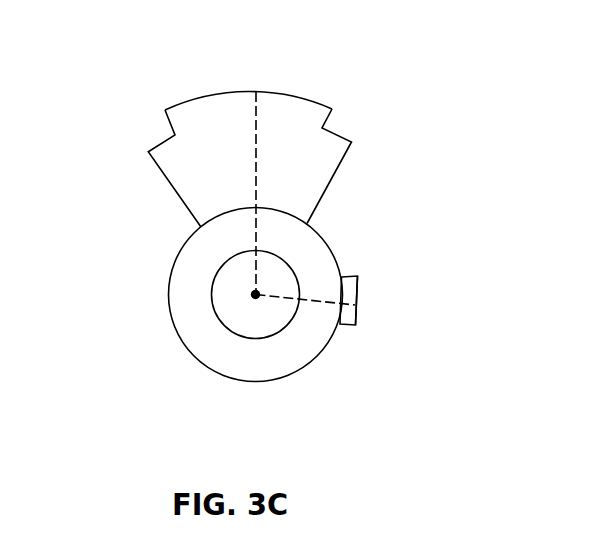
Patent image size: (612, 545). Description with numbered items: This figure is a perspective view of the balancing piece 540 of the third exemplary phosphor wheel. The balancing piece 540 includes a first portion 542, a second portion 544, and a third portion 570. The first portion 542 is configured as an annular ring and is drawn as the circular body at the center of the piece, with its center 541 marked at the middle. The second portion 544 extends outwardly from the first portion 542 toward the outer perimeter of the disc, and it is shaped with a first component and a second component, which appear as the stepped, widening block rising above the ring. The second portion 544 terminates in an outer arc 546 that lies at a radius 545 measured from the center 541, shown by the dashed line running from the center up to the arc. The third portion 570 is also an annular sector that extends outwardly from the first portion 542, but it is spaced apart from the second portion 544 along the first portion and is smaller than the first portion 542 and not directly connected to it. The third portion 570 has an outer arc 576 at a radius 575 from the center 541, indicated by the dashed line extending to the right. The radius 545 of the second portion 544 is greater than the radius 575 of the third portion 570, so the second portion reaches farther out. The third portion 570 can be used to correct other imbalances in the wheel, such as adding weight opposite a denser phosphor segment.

The balancing piece 540 is at (85, 60).
The center 541 is at (247, 294).
The first portion 542 is at (222, 348).
The second portion 544 is at (231, 134).
The radius 545 is at (258, 165).
The outer arc 546 is at (282, 92).
The third portion 570 is at (420, 280).
The radius 575 is at (323, 298).
The outer arc 576 is at (358, 297).